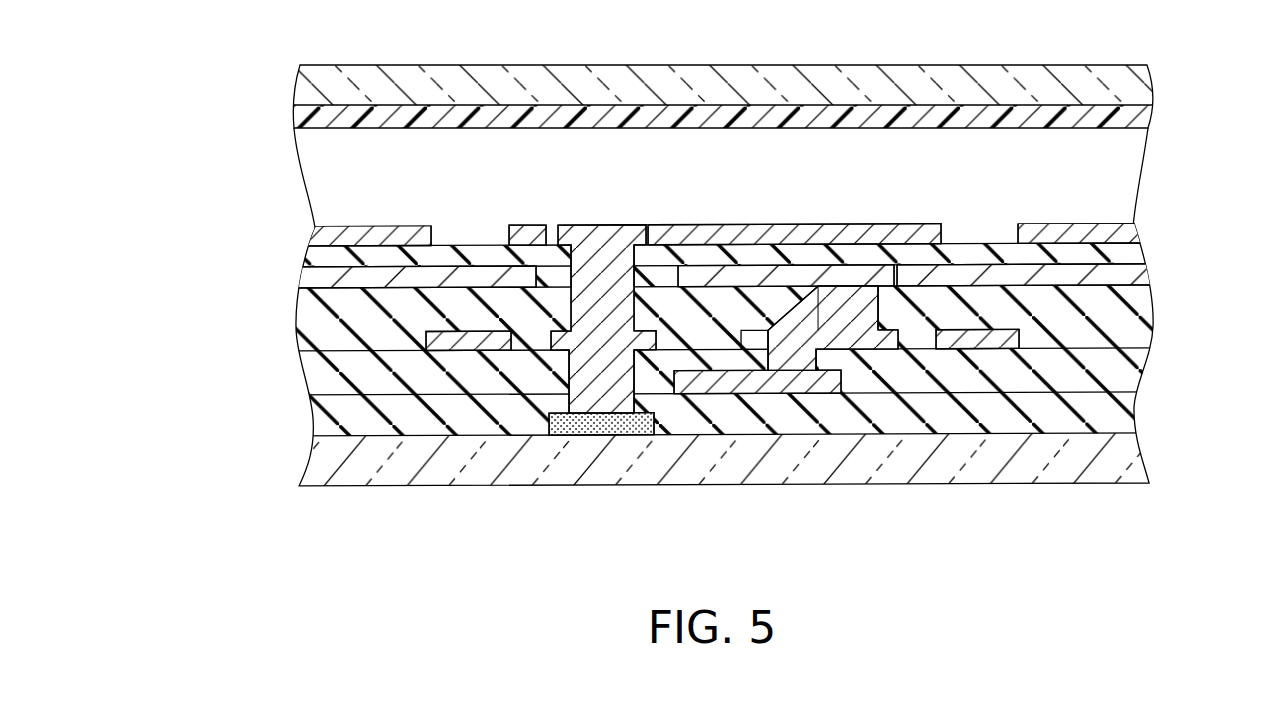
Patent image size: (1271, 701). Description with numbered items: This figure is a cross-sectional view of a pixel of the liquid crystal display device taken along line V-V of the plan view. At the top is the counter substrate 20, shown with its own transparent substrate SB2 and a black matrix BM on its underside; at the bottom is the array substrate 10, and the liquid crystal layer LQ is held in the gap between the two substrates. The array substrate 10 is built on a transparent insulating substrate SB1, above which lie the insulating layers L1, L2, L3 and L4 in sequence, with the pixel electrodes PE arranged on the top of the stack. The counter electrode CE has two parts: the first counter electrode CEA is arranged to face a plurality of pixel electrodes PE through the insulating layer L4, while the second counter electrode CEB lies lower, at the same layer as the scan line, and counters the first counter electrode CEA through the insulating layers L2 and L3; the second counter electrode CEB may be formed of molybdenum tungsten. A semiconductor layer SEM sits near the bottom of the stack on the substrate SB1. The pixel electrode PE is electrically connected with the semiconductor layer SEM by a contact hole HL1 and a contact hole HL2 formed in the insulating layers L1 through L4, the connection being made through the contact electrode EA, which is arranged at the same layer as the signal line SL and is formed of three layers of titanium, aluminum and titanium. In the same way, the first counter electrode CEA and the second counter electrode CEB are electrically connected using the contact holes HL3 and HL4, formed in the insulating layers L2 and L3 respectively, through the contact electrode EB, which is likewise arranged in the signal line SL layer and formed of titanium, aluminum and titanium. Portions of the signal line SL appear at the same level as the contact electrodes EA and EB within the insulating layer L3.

The counter substrate 20 is at (293, 127).
The array substrate 10 is at (1160, 340).
The second substrate SB2 is at (363, 90).
The transparent insulating substrate SB1 is at (300, 465).
The black matrix BM is at (458, 117).
The line V- V is at (725, 68).
The liquid crystal layer LQ is at (1125, 182).
The pixel electrode PE is at (358, 227).
The insulating layer L4 is at (303, 257).
The insulating layer L3 is at (297, 318).
The insulating layer L2 is at (310, 377).
The insulating layer L1 is at (312, 420).
The counter electrode CE is at (297, 283).
The first counter electrode CEA is at (1147, 276).
The second counter electrode CEB is at (800, 388).
The contact electrode EA is at (647, 333).
The contact electrode EB is at (758, 345).
The contact hole HL1 is at (556, 352).
The contact hole HL2 is at (565, 268).
The contact hole HL3 is at (750, 372).
The contact hole HL4 is at (880, 289).
The signal line SL is at (475, 345).
The semiconductor layer SEM is at (600, 426).